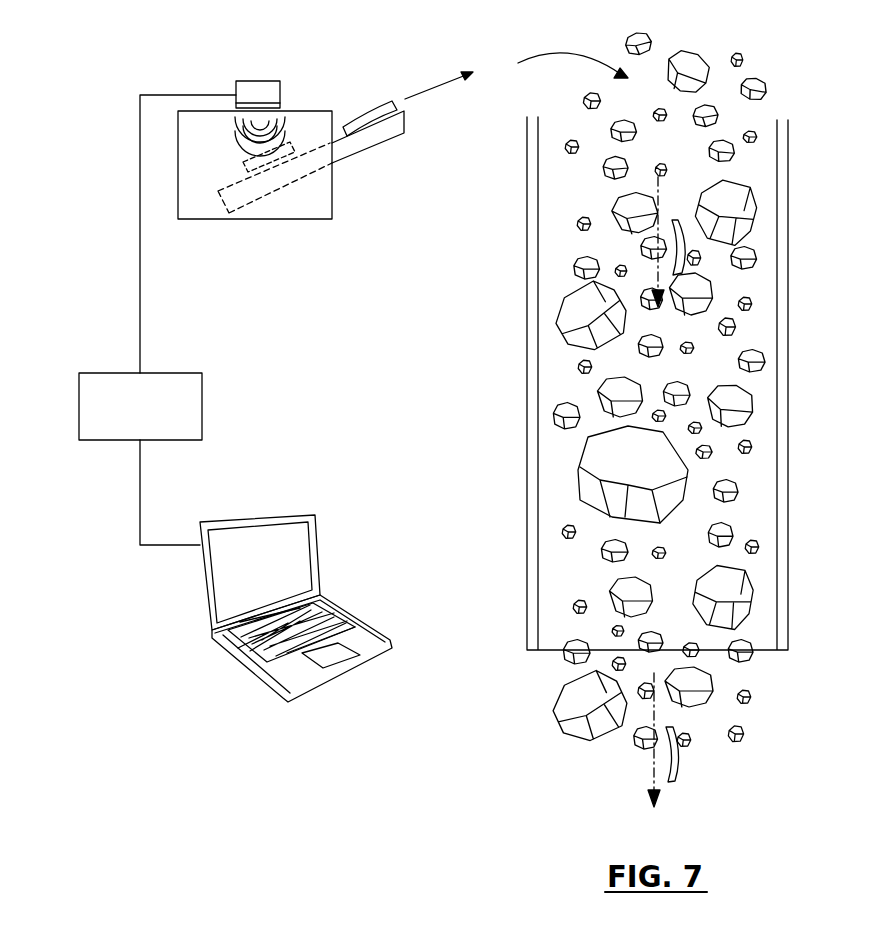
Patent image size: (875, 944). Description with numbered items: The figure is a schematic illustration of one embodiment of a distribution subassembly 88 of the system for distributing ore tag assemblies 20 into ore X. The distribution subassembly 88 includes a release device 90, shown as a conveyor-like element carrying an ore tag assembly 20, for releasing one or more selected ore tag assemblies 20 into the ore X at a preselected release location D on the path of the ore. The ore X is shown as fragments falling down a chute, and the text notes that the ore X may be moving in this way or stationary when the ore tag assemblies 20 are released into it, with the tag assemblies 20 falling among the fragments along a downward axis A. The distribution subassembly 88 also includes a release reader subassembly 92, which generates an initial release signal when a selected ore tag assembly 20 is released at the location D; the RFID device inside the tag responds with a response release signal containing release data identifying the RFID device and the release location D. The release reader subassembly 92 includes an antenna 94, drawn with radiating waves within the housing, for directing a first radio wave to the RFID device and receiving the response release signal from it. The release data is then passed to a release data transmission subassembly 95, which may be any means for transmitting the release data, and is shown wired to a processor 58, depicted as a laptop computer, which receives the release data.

The ore tag assembly 20 is at (377, 117).
The processor 58 is at (203, 600).
The distribution subassembly 88 is at (322, 81).
The release device 90 is at (325, 160).
The release reader subassembly 92 is at (258, 85).
The antenna 94 is at (231, 113).
The release data transmission subassembly 95 is at (110, 377).
The release location D is at (797, 73).
The ore X is at (672, 468).
The fall axis A is at (648, 760).